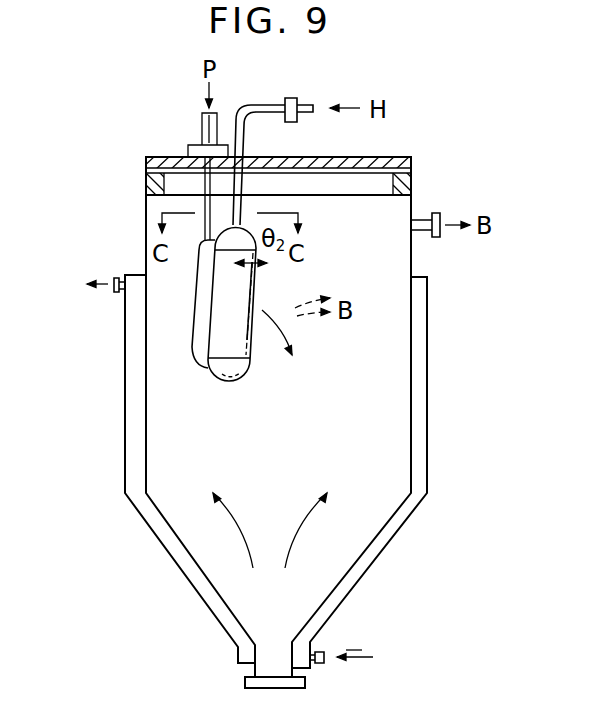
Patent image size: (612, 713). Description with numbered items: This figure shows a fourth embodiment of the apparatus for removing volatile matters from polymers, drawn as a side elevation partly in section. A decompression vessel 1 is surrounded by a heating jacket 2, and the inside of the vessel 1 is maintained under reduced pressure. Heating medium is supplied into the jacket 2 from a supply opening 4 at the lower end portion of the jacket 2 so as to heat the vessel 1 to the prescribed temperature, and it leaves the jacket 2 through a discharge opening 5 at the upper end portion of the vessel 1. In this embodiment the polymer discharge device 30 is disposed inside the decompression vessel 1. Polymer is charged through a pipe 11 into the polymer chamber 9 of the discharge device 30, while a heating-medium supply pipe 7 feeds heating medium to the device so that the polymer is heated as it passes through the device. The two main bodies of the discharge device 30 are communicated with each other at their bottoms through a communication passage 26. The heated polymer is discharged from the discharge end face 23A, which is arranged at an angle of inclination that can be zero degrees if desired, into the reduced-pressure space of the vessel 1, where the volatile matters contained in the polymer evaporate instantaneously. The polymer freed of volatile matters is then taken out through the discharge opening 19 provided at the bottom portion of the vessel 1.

The decompression vessel 1 is at (146, 452).
The heating jacket 2 is at (125, 403).
The supply opening 4 is at (341, 663).
The discharge opening 5 is at (118, 293).
The heating-medium supply pipe 7 is at (247, 135).
The polymer chamber 9 is at (193, 350).
The pipe 11 is at (207, 183).
The discharge opening 19 is at (248, 670).
The discharge end face 23A is at (255, 280).
The communication passage 26 is at (250, 367).
The polymer discharge device 30 is at (193, 288).